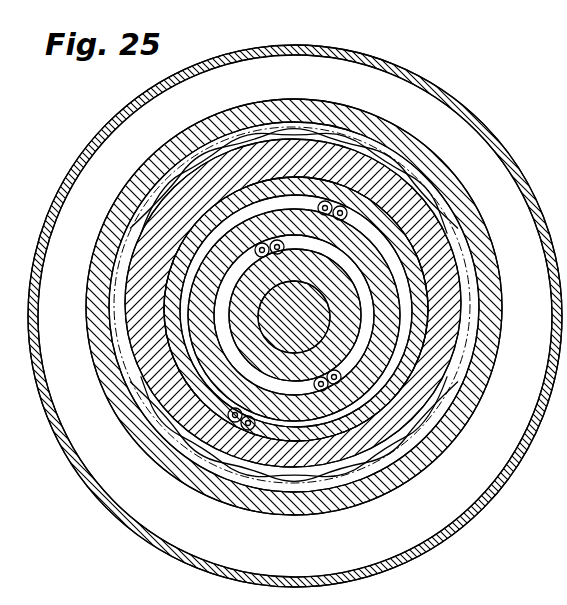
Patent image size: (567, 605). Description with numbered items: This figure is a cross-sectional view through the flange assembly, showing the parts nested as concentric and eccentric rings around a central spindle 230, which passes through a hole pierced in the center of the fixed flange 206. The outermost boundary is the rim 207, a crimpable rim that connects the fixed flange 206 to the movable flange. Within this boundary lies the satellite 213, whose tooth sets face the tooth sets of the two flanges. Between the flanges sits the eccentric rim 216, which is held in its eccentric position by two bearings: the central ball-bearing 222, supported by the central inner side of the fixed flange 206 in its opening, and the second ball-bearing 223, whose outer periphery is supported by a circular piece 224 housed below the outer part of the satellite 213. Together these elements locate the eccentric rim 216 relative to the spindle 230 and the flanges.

The rim 207 is at (455, 105).
The fixed flange 206 is at (327, 280).
The satellite 213 is at (447, 280).
The eccentric rim 216 is at (393, 278).
The second ball-bearing 223 is at (405, 327).
The circular piece 224 is at (325, 200).
The central ball-bearing 222 is at (342, 378).
The spindle 230 is at (312, 332).